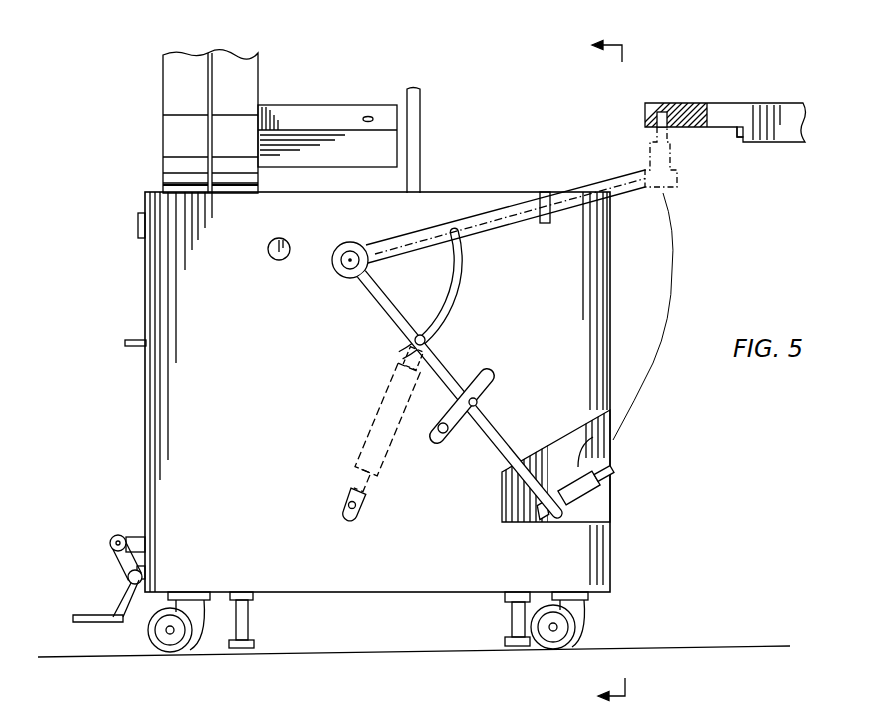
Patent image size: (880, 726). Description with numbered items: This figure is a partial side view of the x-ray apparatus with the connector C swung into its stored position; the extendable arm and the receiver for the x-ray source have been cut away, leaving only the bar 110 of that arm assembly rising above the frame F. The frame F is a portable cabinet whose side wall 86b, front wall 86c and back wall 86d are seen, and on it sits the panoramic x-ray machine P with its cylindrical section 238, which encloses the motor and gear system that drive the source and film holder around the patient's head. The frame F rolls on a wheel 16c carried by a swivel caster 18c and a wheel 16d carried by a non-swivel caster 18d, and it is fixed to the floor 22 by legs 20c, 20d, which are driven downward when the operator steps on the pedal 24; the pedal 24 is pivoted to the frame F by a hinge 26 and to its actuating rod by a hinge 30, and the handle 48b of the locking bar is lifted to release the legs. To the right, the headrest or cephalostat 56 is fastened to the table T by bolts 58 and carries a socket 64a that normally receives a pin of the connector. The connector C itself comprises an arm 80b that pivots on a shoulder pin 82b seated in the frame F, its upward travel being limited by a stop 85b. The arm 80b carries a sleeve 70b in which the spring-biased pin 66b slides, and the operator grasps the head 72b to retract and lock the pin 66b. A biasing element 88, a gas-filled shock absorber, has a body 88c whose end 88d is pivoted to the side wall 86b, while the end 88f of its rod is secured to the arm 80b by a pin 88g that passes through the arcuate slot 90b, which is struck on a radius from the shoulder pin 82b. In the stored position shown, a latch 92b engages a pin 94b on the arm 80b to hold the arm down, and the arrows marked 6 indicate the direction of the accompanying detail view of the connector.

The cylindrical section 238 is at (259, 67).
The panoramic x-ray machine P is at (223, 116).
The bar 110 is at (423, 149).
The headrest 56 is at (733, 102).
The table T is at (744, 119).
The bolts 58 is at (737, 137).
The socket 64a is at (656, 122).
The stop 85b is at (547, 224).
The shoulder pin 82b is at (337, 270).
The arm 80b is at (377, 310).
The connector C is at (466, 293).
The arcuate slot 90b is at (464, 281).
The biasing element 88 is at (396, 428).
The body 88c is at (385, 468).
The end 88d is at (343, 504).
The end 88f is at (397, 353).
The pin 88g is at (433, 355).
The pin 94b is at (505, 428).
The latch 92b is at (458, 430).
The sleeve 70b is at (613, 440).
The pin 66b is at (615, 483).
The head 72b is at (533, 522).
The frame F is at (369, 392).
The side wall 86b is at (241, 433).
The front wall 86c is at (613, 546).
The back wall 86d is at (146, 440).
The handle 48b is at (135, 348).
The hinge 30 is at (118, 535).
The hinge 26 is at (127, 574).
The pedal 24 is at (90, 613).
The wheel 16c is at (162, 650).
The swivel caster 18c is at (198, 622).
The wheel 16d is at (566, 650).
The non-swivel caster 18d is at (585, 610).
The leg 20c is at (255, 622).
The leg 20d is at (508, 620).
The floor 22 is at (750, 646).
The section line 6- 6 is at (595, 370).